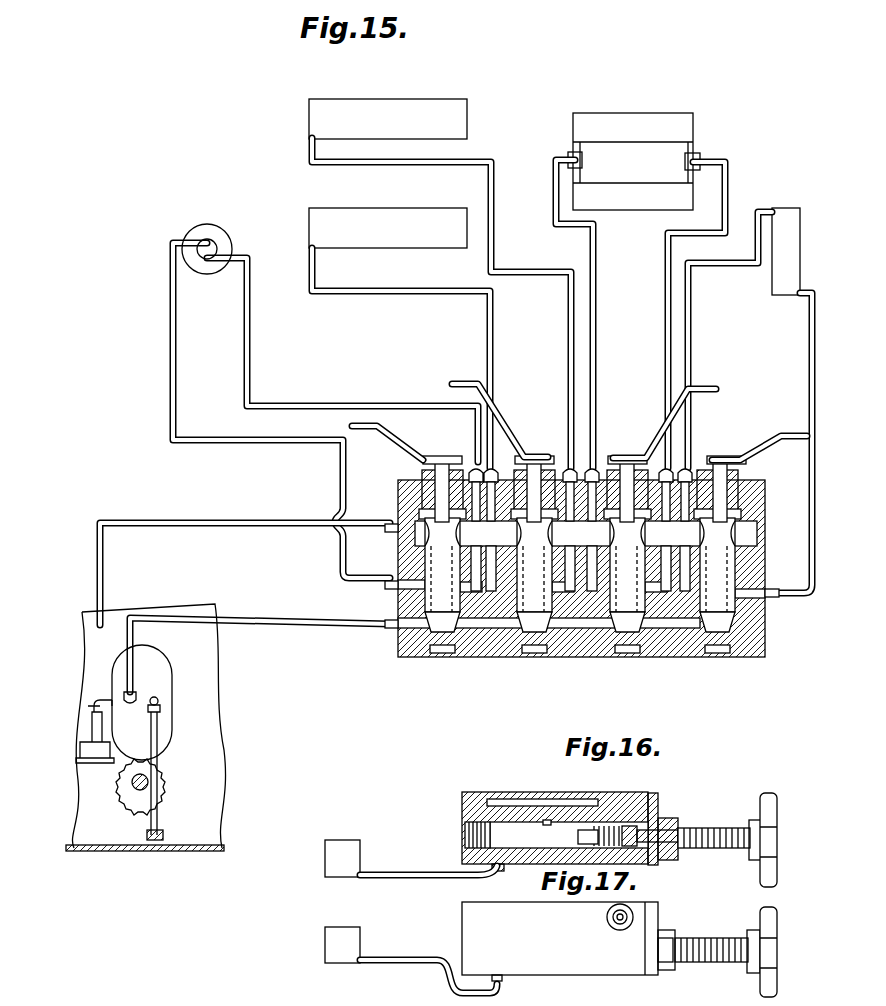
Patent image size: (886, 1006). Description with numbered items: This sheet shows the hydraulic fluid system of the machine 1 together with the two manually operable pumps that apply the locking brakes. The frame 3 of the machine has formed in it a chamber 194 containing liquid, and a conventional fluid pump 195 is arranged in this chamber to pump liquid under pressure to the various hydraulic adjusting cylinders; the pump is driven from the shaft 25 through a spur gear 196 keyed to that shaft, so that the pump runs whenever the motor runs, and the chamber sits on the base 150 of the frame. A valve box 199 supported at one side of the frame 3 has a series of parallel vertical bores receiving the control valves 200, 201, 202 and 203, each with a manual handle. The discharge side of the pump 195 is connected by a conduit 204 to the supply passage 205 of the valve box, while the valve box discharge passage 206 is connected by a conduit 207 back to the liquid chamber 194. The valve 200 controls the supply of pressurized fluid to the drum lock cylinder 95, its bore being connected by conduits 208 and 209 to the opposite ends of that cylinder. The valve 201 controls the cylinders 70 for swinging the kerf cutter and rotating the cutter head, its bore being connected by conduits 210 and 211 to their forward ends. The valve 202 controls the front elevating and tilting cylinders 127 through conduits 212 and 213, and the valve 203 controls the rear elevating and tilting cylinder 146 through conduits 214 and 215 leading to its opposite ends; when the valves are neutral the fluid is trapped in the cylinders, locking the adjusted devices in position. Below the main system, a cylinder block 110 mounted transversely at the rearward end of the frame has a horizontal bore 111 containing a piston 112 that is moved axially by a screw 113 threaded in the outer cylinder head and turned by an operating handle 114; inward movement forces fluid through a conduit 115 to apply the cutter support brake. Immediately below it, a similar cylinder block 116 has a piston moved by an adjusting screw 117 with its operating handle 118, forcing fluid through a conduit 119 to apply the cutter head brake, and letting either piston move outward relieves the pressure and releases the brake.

In FIG. 15, the cylinders 70 is at (420, 99).
In FIG. 15, the front elevating and tilting cylinders 127 is at (660, 186).
In FIG. 15, the rear elevating and tilting cylinder 146 is at (793, 208).
In FIG. 15, the drum lock cylinder 95 is at (233, 240).
In FIG. 15, the valve box 199 is at (496, 660).
In FIG. 15, the control valve 200 is at (396, 626).
In FIG. 15, the control valve 201 is at (540, 600).
In FIG. 15, the control valve 202 is at (628, 603).
In FIG. 15, the control valve 203 is at (726, 602).
In FIG. 15, the conduit 204 is at (270, 616).
In FIG. 15, the supply passage 205 is at (442, 600).
In FIG. 15, the valve box discharge passage 206 is at (505, 528).
In FIG. 15, the conduit 207 is at (222, 518).
In FIG. 15, the conduit 208 is at (178, 416).
In FIG. 15, the conduit 209 is at (252, 372).
In FIG. 15, the conduit 210 is at (487, 352).
In FIG. 15, the conduit 211 is at (570, 330).
In FIG. 15, the conduit 212 is at (597, 352).
In FIG. 15, the conduit 213 is at (666, 302).
In FIG. 15, the conduit 214 is at (692, 355).
In FIG. 15, the conduit 215 is at (810, 358).
In FIG. 15, the chamber 194 is at (104, 828).
In FIG. 15, the fluid pump 195 is at (172, 678).
In FIG. 15, the shaft 25 is at (132, 785).
In FIG. 15, the spur gear 196 is at (160, 792).
In FIG. 15, the frame 3 is at (150, 846).
In FIG. 15, the base 150 is at (203, 848).
In FIG. 15, the machine 1 is at (232, 840).
In FIG. 16, the cylinder block 110 is at (522, 795).
In FIG. 16, the horizontal bore 111 is at (556, 800).
In FIG. 16, the piston 112 is at (612, 796).
In FIG. 16, the screw 113 is at (702, 828).
In FIG. 16, the operating handle 114 is at (778, 784).
In FIG. 16, the conduit 115 is at (408, 872).
In FIG. 17, the cylinder block 116 is at (580, 966).
In FIG. 17, the adjusting screw 117 is at (710, 938).
In FIG. 17, the operating handle 118 is at (776, 908).
In FIG. 17, the conduit 119 is at (415, 965).